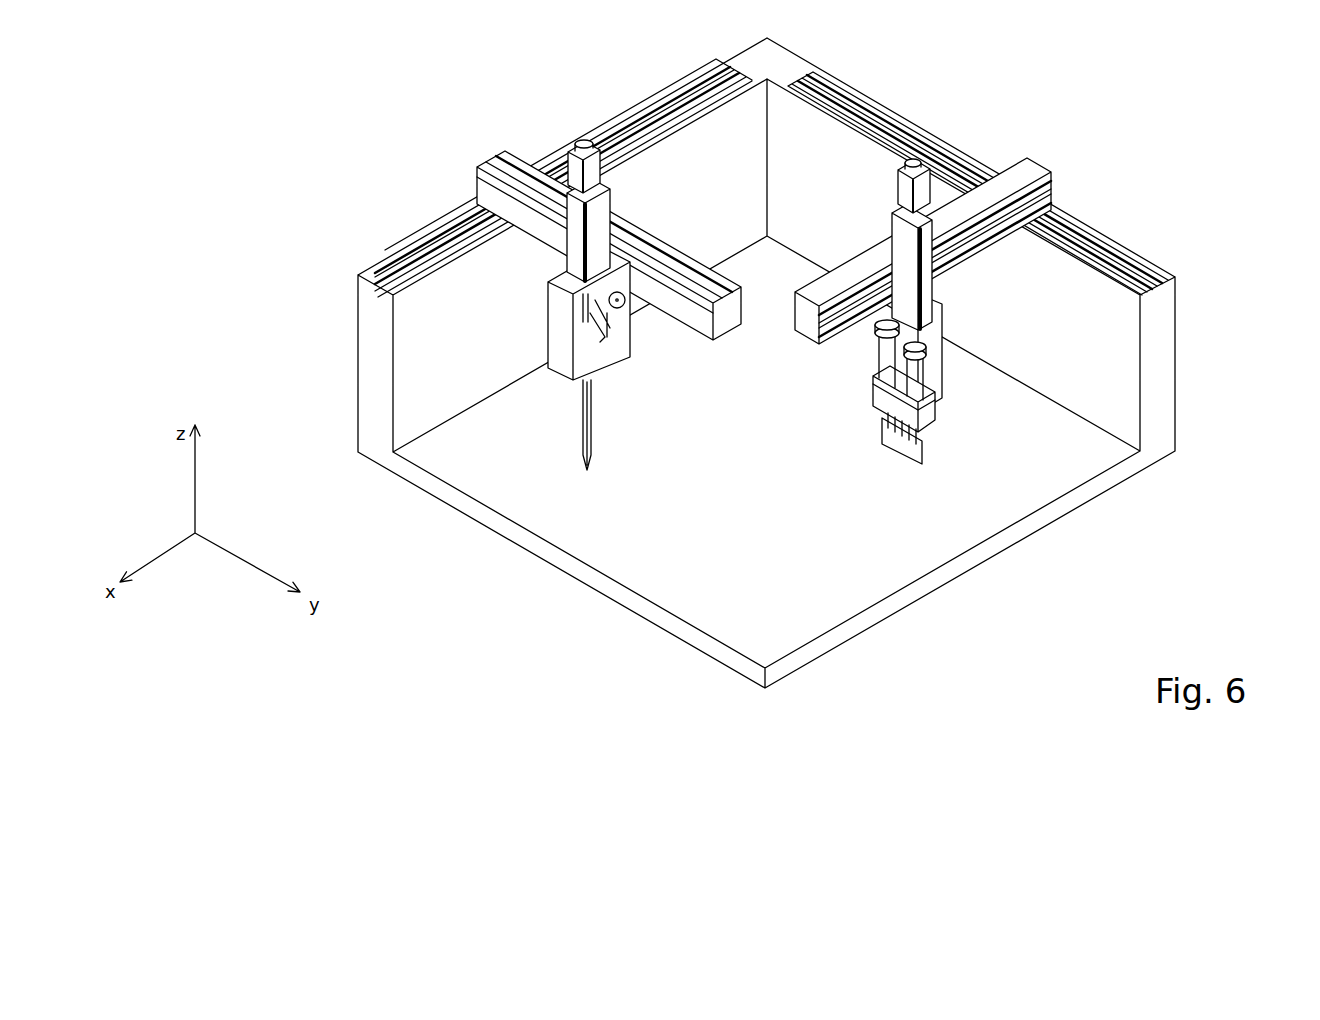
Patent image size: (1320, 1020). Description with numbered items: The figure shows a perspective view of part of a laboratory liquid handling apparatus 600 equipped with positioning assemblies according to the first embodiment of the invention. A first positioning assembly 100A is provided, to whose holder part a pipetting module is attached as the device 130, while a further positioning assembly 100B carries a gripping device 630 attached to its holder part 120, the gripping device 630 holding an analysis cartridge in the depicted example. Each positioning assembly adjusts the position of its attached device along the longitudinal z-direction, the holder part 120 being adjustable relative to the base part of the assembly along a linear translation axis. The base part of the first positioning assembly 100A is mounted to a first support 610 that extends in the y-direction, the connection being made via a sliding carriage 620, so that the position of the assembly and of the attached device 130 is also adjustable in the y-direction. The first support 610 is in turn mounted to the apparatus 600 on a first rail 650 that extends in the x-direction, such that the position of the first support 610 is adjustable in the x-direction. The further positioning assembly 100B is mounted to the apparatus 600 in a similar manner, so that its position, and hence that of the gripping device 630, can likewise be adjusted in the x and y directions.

The liquid handling apparatus 600 is at (395, 110).
The first rail 650 is at (697, 98).
The first positioning assembly 100A is at (505, 305).
The further positioning assembly 100B is at (1046, 377).
The first support 610 is at (673, 268).
The sliding carriage 620 is at (610, 253).
The device 130 is at (553, 348).
The holder part 120 is at (923, 330).
The gripping device 630 is at (930, 425).